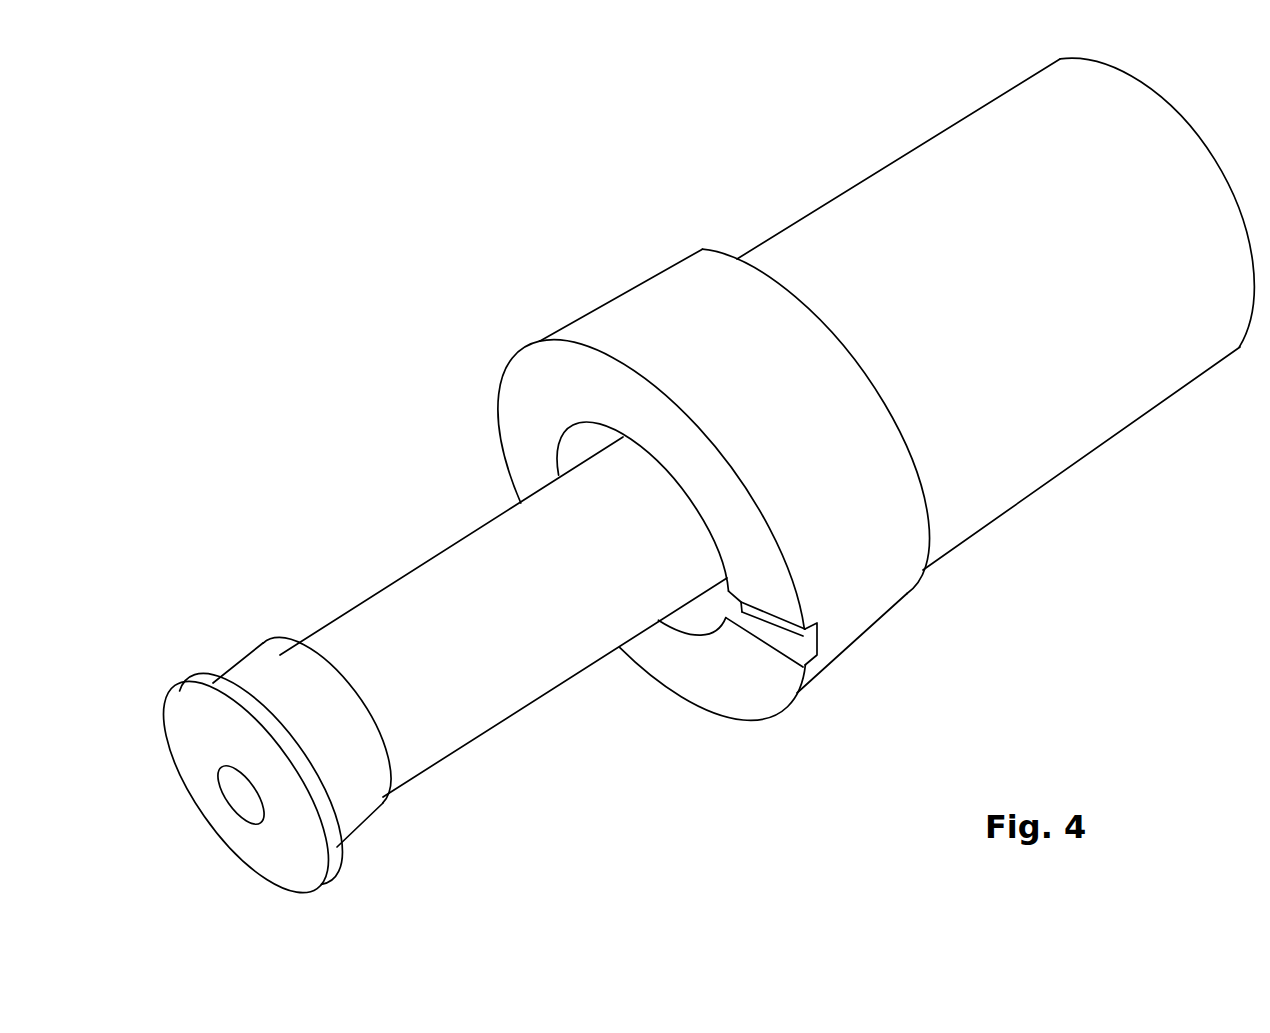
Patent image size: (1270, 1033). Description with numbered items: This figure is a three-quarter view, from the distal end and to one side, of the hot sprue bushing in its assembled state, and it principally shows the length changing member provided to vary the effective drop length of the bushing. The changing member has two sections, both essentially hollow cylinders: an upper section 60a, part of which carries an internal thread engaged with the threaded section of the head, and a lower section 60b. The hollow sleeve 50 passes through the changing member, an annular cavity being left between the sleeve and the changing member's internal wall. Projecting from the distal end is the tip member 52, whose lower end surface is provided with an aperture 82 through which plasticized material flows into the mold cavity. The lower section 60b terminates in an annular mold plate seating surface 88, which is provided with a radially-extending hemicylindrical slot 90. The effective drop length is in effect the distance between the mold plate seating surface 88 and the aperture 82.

The hollow sleeve 50 is at (510, 560).
The tip member 52 is at (340, 782).
The upper section 60a is at (1072, 267).
The lower section 60b is at (662, 318).
The aperture 82 is at (263, 800).
The mold plate seating surface 88 is at (748, 548).
The hemicylindrical slot 90 is at (787, 643).